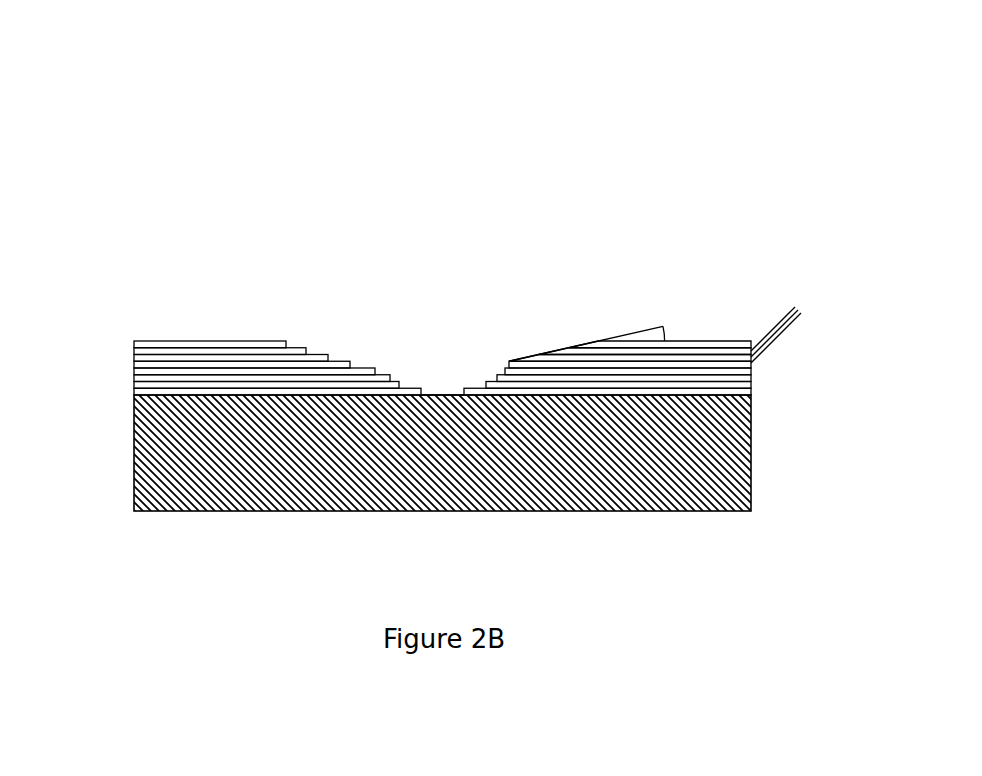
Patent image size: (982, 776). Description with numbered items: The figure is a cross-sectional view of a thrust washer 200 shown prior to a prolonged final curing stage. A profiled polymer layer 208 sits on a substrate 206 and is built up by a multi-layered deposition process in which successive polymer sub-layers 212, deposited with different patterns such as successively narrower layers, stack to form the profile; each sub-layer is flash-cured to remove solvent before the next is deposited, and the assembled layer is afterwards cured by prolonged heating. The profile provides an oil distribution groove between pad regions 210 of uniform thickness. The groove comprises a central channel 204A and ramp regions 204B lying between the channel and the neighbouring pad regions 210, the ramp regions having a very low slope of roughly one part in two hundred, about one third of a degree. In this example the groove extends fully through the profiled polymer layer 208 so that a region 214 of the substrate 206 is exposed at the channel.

The thrust washer 200 is at (246, 81).
The channel 204A is at (429, 371).
The ramp regions 204B is at (316, 327).
The substrate 206 is at (160, 437).
The profiled polymer layer 208 is at (117, 335).
The pad regions 210 is at (208, 321).
The polymer sub-layers 212 is at (802, 320).
The exposed regions of the substrate 214 is at (425, 388).